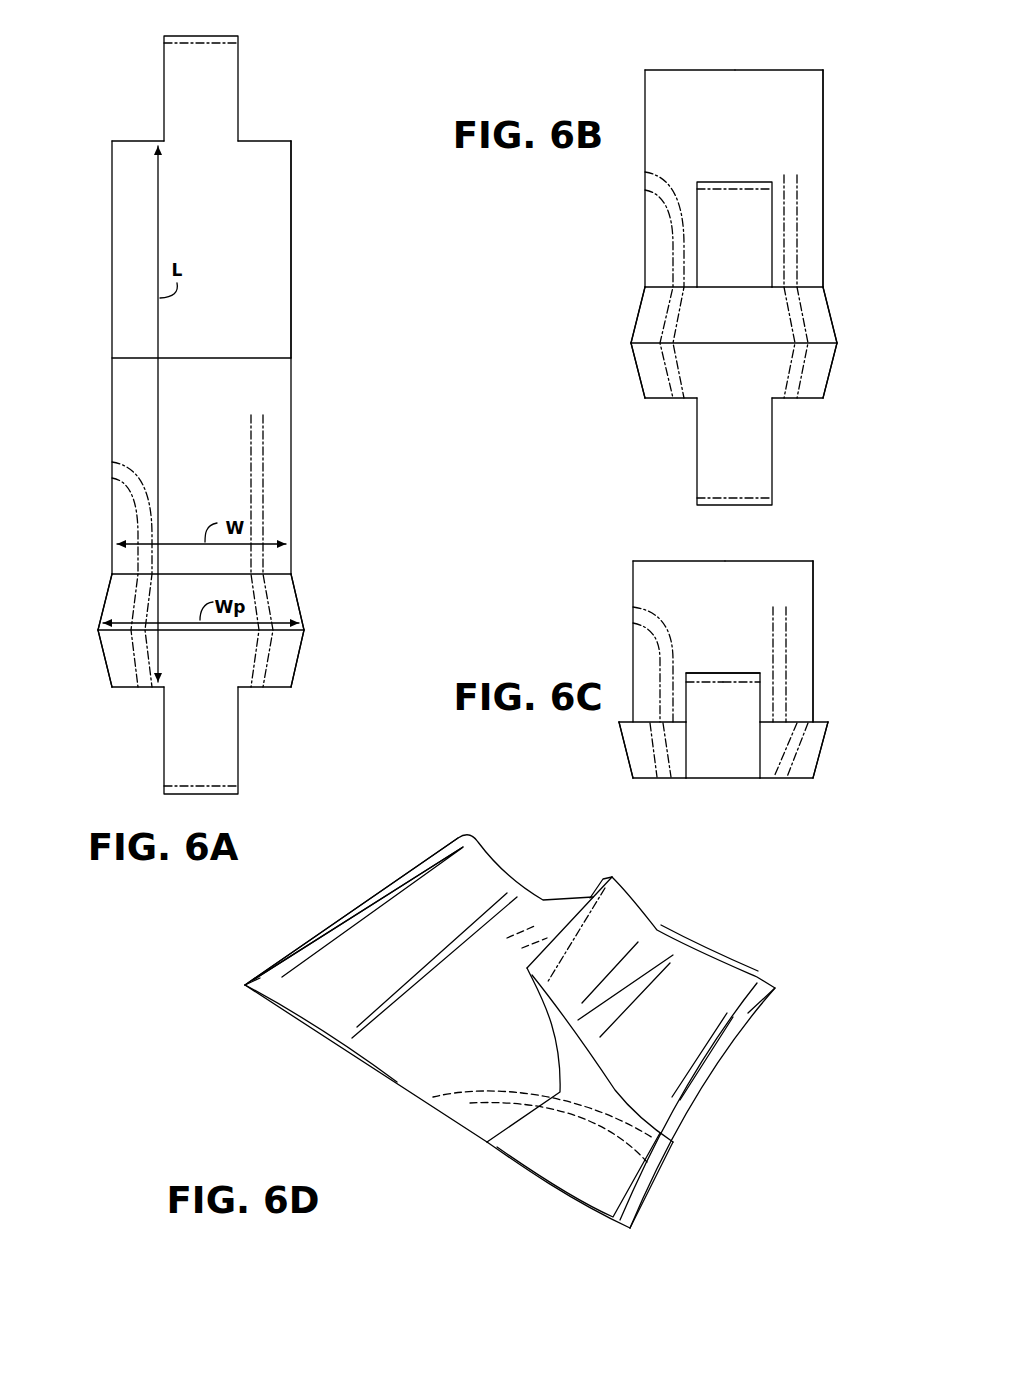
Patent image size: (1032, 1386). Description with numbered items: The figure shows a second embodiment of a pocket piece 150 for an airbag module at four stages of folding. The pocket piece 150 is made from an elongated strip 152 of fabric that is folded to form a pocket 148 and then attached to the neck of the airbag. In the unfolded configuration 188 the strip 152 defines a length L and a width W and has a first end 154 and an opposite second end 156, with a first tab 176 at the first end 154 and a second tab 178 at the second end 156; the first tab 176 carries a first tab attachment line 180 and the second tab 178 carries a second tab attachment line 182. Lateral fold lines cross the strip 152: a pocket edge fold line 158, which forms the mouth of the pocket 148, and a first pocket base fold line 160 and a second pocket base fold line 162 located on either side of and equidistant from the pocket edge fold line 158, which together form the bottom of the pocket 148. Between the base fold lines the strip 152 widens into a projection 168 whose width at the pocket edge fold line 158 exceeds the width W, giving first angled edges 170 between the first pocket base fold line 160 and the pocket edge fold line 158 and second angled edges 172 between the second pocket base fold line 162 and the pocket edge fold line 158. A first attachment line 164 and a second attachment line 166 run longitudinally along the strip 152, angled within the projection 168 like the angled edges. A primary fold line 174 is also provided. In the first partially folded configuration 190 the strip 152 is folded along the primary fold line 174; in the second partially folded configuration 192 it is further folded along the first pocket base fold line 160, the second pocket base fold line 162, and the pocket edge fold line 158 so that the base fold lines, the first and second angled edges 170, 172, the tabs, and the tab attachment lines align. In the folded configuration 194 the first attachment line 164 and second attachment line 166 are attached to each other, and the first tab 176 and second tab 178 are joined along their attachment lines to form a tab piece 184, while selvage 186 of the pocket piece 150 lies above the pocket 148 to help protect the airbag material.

In FIG. 6D, the pocket 148 is at (513, 1025).
In FIG. 6A, the pocket piece 150 is at (137, 242).
In FIG. 6B, the pocket piece 150 is at (680, 123).
In FIG. 6C, the pocket piece 150 is at (668, 580).
In FIG. 6D, the pocket piece 150 is at (303, 940).
In FIG. 6A, the strip 152 is at (112, 140).
In FIG. 6B, the strip 152 is at (645, 68).
In FIG. 6C, the strip 152 is at (702, 560).
In FIG. 6D, the strip 152 is at (358, 897).
In FIG. 6A, the first end 154 is at (280, 140).
In FIG. 6B, the first end 154 is at (808, 286).
In FIG. 6A, the second end 156 is at (280, 690).
In FIG. 6B, the second end 156 is at (820, 402).
In FIG. 6C, the second end 156 is at (768, 782).
In FIG. 6D, the second end 156 is at (707, 1093).
In FIG. 6A, the pocket edge fold line 158 is at (118, 630).
In FIG. 6B, the pocket edge fold line 158 is at (648, 340).
In FIG. 6C, the pocket edge fold line 158 is at (807, 722).
In FIG. 6D, the pocket edge fold line 158 is at (487, 1140).
In FIG. 6A, the first pocket base fold line 160 is at (128, 573).
In FIG. 6B, the first pocket base fold line 160 is at (660, 285).
In FIG. 6C, the first pocket base fold line 160 is at (745, 780).
In FIG. 6D, the first pocket base fold line 160 is at (647, 1183).
In FIG. 6A, the second pocket base fold line 162 is at (123, 690).
In FIG. 6B, the second pocket base fold line 162 is at (658, 397).
In FIG. 6C, the second pocket base fold line 162 is at (723, 819).
In FIG. 6D, the second pocket base fold line 162 is at (578, 1175).
In FIG. 6A, the first attachment line 164 is at (137, 527).
In FIG. 6B, the first attachment line 164 is at (670, 218).
In FIG. 6C, the first attachment line 164 is at (658, 665).
In FIG. 6D, the first attachment line 164 is at (467, 1093).
In FIG. 6A, the second attachment line 166 is at (263, 488).
In FIG. 6B, the second attachment line 166 is at (800, 265).
In FIG. 6C, the second attachment line 166 is at (787, 680).
In FIG. 6D, the second attachment line 166 is at (543, 900).
In FIG. 6A, the projection 168 is at (313, 622).
In FIG. 6B, the projection 168 is at (851, 335).
In FIG. 6C, the projection 168 is at (834, 735).
In FIG. 6D, the projection 168 is at (552, 1205).
In FIG. 6A, the first angled edges 170 is at (297, 602).
In FIG. 6B, the first angled edges 170 is at (832, 317).
In FIG. 6C, the first angled edges 170 is at (815, 775).
In FIG. 6D, the first angled edges 170 is at (713, 955).
In FIG. 6A, the second angled edges 172 is at (298, 647).
In FIG. 6B, the second angled edges 172 is at (825, 380).
In FIG. 6C, the second angled edges 172 is at (767, 760).
In FIG. 6D, the second angled edges 172 is at (689, 1066).
In FIG. 6A, the primary fold line 174 is at (243, 358).
In FIG. 6B, the primary fold line 174 is at (773, 70).
In FIG. 6C, the primary fold line 174 is at (788, 560).
In FIG. 6D, the primary fold line 174 is at (420, 858).
In FIG. 6A, the first tab 176 is at (217, 105).
In FIG. 6B, the first tab 176 is at (737, 178).
In FIG. 6C, the first tab 176 is at (697, 765).
In FIG. 6D, the first tab 176 is at (710, 1002).
In FIG. 6A, the second tab 178 is at (183, 755).
In FIG. 6B, the second tab 178 is at (715, 460).
In FIG. 6C, the second tab 178 is at (715, 785).
In FIG. 6A, the first tab attachment line 180 is at (185, 43).
In FIG. 6B, the first tab attachment line 180 is at (750, 190).
In FIG. 6C, the first tab attachment line 180 is at (740, 680).
In FIG. 6D, the first tab attachment line 180 is at (610, 876).
In FIG. 6A, the second tab attachment line 182 is at (217, 788).
In FIG. 6B, the second tab attachment line 182 is at (748, 498).
In FIG. 6C, the second tab attachment line 182 is at (790, 646).
In FIG. 6D, the second tab attachment line 182 is at (574, 905).
In FIG. 6C, the tab piece 184 is at (697, 670).
In FIG. 6D, the tab piece 184 is at (685, 1030).
In FIG. 6D, the selvage 186 is at (317, 1000).
In FIG. 6A, the unfolded configuration 188 is at (292, 168).
In FIG. 6B, the first partially folded configuration 190 is at (823, 70).
In FIG. 6C, the second partially folded configuration 192 is at (813, 563).
In FIG. 6D, the folded configuration 194 is at (245, 985).